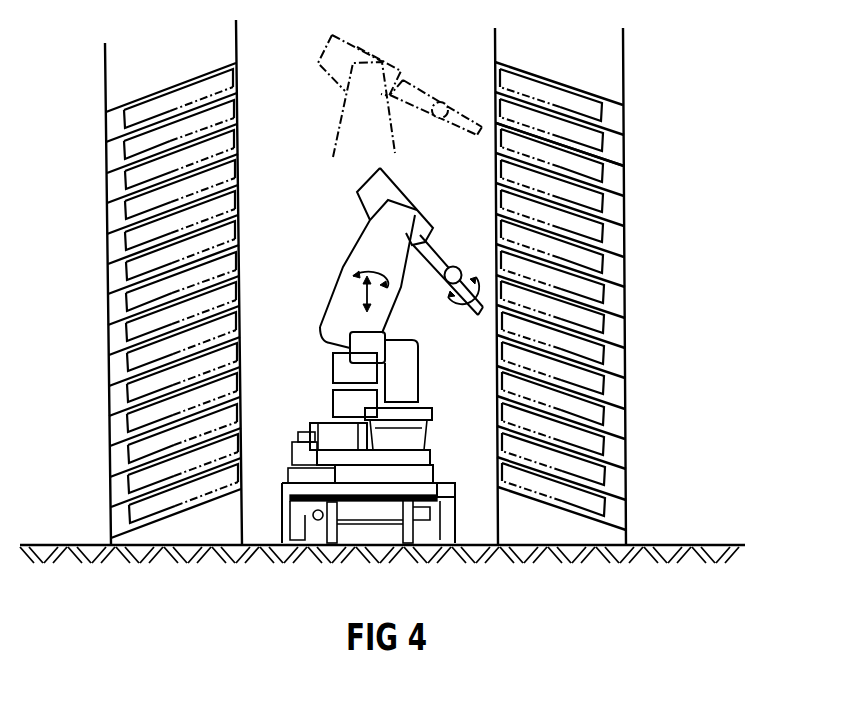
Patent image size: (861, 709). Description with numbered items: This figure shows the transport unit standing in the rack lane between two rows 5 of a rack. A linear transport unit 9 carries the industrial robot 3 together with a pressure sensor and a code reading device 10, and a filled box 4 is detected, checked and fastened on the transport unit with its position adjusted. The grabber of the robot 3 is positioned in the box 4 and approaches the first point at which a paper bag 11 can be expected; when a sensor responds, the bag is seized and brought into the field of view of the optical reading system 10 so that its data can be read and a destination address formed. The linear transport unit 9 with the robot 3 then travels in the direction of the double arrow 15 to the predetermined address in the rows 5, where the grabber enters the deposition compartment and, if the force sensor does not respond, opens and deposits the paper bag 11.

The industrial robot 3 is at (392, 298).
The box 4 is at (413, 455).
The rows of a rack 5 is at (105, 78).
The linear transport unit 9 is at (433, 472).
The code reading device 10 is at (383, 333).
The paper bag 11 is at (413, 413).
The double arrow 15 is at (502, 154).